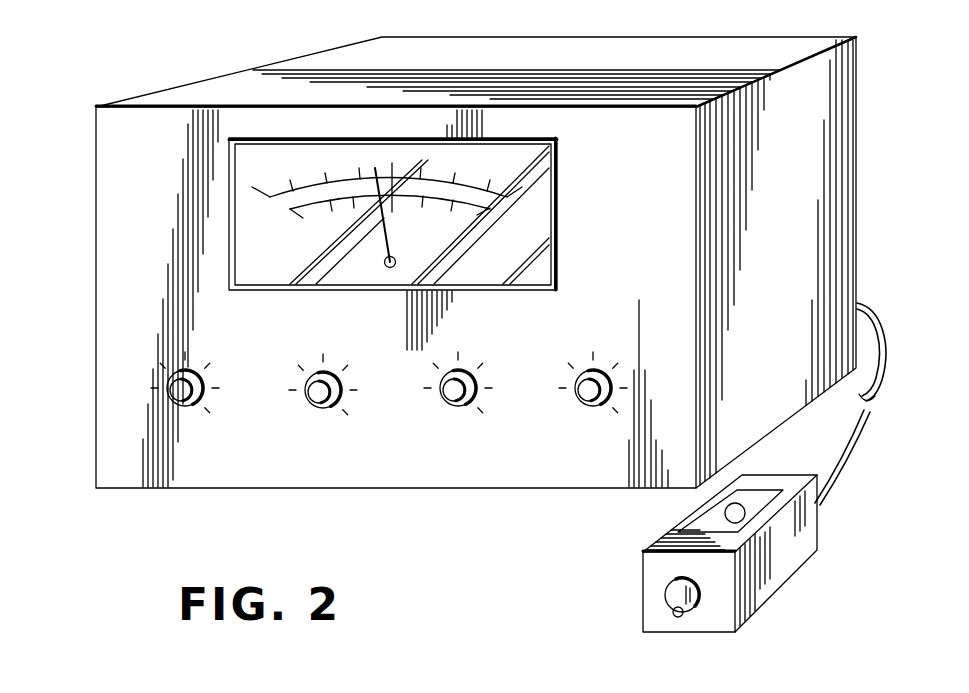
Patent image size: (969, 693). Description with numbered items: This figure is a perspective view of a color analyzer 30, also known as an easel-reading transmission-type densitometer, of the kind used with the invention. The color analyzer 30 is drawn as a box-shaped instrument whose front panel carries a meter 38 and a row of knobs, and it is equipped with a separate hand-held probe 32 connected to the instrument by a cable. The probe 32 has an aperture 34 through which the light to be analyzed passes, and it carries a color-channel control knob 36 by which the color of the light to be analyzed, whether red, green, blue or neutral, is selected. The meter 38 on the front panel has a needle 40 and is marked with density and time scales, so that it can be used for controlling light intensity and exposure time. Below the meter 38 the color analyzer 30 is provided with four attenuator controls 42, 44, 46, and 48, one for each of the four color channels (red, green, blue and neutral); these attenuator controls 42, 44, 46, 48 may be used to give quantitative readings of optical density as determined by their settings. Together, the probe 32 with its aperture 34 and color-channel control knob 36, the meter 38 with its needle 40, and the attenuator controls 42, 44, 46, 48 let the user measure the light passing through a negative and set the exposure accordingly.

The color analyzer 30 is at (25, 237).
The probe 32 is at (782, 552).
The aperture 34 is at (725, 512).
The color-channel control knob 36 is at (664, 601).
The meter 38 is at (245, 205).
The needle 40 is at (385, 258).
The attenuator control 42 is at (167, 397).
The attenuator control 44 is at (303, 391).
The attenuator control 46 is at (456, 404).
The attenuator control 48 is at (582, 402).